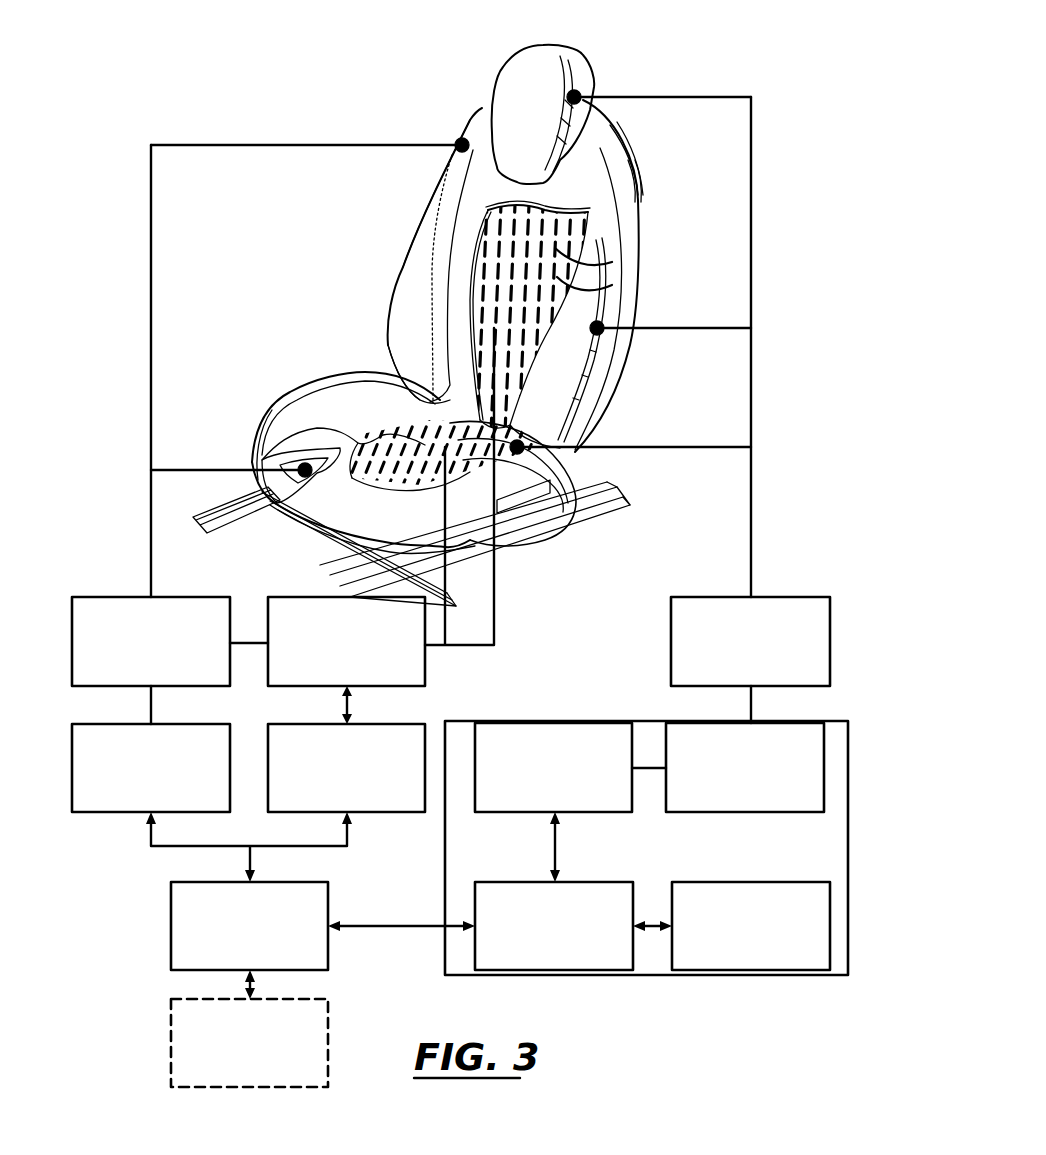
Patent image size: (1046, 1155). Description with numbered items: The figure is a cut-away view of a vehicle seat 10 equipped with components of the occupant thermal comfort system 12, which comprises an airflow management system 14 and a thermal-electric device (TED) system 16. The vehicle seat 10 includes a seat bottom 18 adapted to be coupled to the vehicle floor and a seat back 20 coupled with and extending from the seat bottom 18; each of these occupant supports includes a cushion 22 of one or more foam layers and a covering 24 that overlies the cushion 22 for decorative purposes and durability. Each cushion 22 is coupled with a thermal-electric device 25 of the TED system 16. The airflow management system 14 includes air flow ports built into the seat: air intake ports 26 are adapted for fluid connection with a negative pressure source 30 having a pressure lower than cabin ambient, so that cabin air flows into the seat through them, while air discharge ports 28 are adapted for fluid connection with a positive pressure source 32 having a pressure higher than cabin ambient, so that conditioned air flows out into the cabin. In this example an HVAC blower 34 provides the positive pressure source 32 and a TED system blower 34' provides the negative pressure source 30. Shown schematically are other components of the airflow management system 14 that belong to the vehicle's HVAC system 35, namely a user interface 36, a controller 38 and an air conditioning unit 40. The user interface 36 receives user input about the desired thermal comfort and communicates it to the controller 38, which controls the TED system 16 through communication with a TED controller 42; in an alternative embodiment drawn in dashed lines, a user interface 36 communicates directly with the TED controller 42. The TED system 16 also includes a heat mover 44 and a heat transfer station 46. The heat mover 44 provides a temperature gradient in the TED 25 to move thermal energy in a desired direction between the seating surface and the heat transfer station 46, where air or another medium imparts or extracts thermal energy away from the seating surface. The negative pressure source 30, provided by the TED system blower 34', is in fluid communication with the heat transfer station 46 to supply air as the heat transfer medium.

The vehicle seat 10 is at (375, 70).
The occupant thermal comfort system 12 is at (766, 240).
The airflow management system 14 is at (792, 553).
The thermal-electric device (TED) system 16 is at (138, 912).
The seat bottom 18 is at (342, 382).
The seat back 20 is at (396, 282).
The cushion 22 is at (520, 222).
The covering 24 is at (410, 394).
The thermal-electric device (TED) 25 is at (612, 285).
The air intake port 26 is at (459, 139).
The air discharge port 28 is at (577, 90).
The negative pressure source 30 is at (120, 597).
The positive pressure source 32 is at (719, 597).
The HVAC blower 34 is at (738, 748).
The TED system blower 34' is at (137, 748).
The HVAC system 35 is at (630, 721).
The user interface 36 is at (173, 999).
The controller 38 is at (517, 882).
The air conditioning unit 40 is at (517, 723).
The TED controller 42 is at (173, 882).
The heat mover 44 is at (305, 724).
The heat transfer station 46 is at (305, 597).